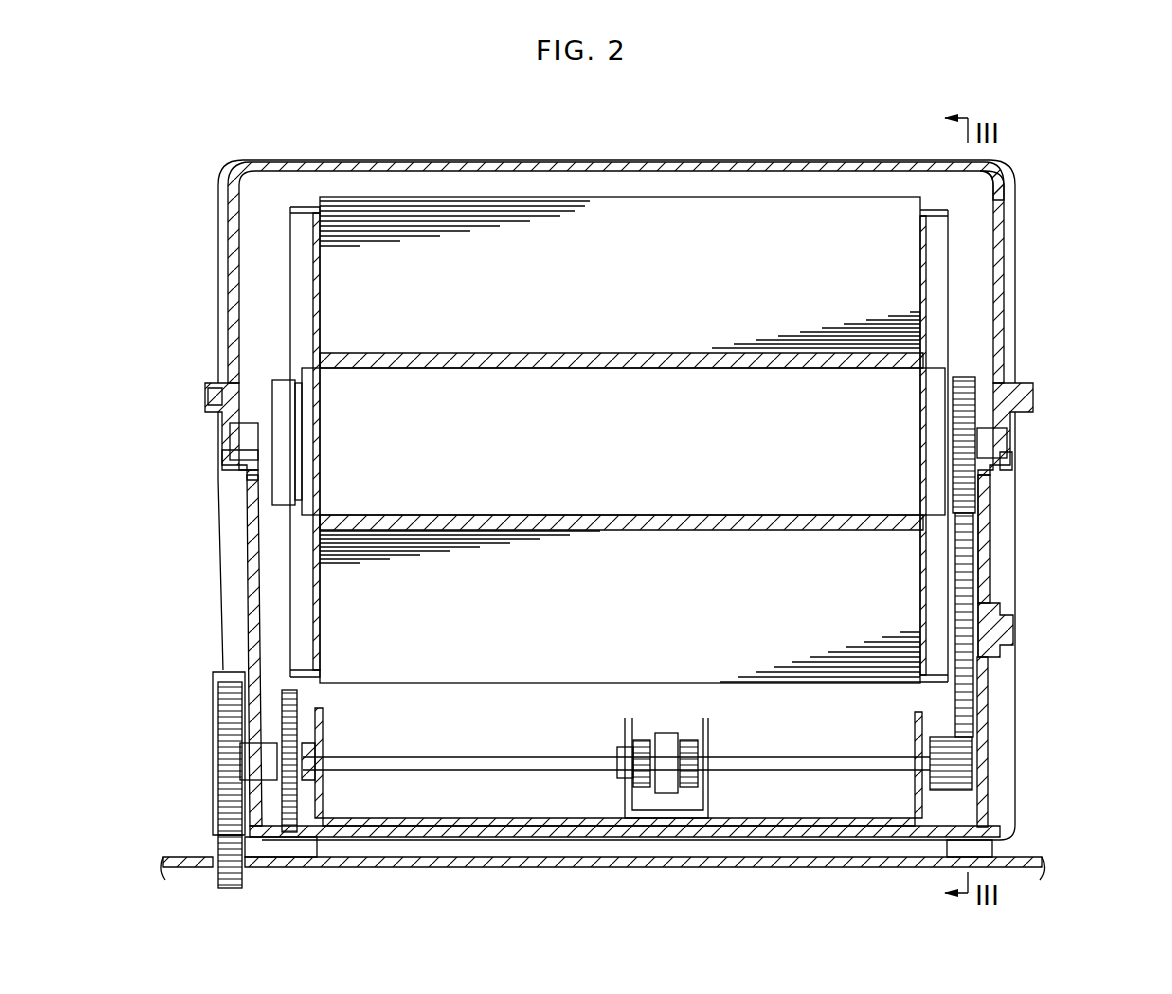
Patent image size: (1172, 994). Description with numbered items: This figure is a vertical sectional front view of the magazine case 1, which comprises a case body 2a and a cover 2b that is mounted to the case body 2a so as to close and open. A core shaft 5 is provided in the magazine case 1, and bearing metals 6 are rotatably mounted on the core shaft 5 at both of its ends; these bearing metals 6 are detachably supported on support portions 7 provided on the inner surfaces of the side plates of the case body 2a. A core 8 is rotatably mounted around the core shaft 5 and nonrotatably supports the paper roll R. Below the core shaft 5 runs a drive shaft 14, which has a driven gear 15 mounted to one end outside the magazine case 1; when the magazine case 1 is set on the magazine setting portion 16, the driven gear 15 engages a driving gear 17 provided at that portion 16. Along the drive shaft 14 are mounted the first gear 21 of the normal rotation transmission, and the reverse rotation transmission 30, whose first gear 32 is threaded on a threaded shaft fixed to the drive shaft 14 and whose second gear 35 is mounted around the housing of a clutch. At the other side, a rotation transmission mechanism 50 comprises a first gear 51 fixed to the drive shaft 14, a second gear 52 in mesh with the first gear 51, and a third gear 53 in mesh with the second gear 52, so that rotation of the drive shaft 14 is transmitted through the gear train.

The magazine case 1 is at (226, 158).
The case body 2a is at (250, 548).
The cover 2b is at (470, 160).
The paper roll R is at (612, 197).
The core shaft 5 is at (222, 397).
The bearing metals 6 is at (232, 440).
The support portions 7 is at (228, 456).
The core 8 is at (622, 443).
The third gear 53 is at (957, 380).
The second gear 52 is at (965, 683).
The rotation transmission mechanism 50 is at (982, 547).
The first gear 51 is at (975, 762).
The magazine setting portion 16 is at (950, 857).
The driven gear 15 is at (222, 750).
The driving gear 17 is at (222, 855).
The first gear 21 is at (292, 803).
The drive shaft 14 is at (548, 765).
The reverse rotation transmission 30 is at (667, 800).
The first gear 32 is at (636, 752).
The second gear 35 is at (692, 750).